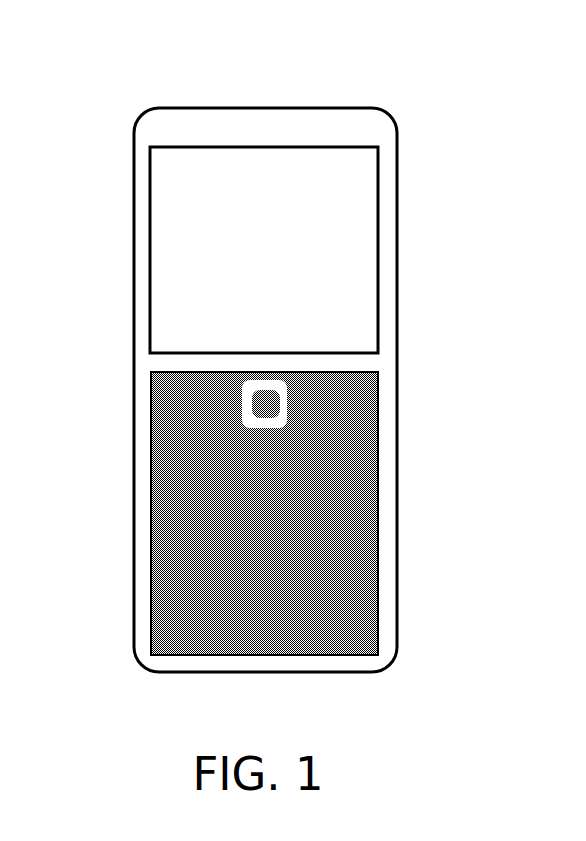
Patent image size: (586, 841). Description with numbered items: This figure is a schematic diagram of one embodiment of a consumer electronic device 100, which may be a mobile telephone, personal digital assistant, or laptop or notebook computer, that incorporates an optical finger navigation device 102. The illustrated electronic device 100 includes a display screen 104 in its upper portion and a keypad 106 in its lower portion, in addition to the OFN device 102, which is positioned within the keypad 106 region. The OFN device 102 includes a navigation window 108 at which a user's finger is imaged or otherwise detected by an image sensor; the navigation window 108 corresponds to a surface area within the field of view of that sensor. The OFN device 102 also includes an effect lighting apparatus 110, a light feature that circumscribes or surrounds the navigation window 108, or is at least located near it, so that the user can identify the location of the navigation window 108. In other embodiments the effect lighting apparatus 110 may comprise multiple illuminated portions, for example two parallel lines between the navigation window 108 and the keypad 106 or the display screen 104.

The consumer electronic device 100 is at (247, 108).
The optical finger navigation (OFN) device 102 is at (235, 403).
The display screen 104 is at (358, 220).
The keypad 106 is at (295, 620).
The navigation window 108 is at (268, 398).
The effect lighting apparatus 110 is at (283, 415).